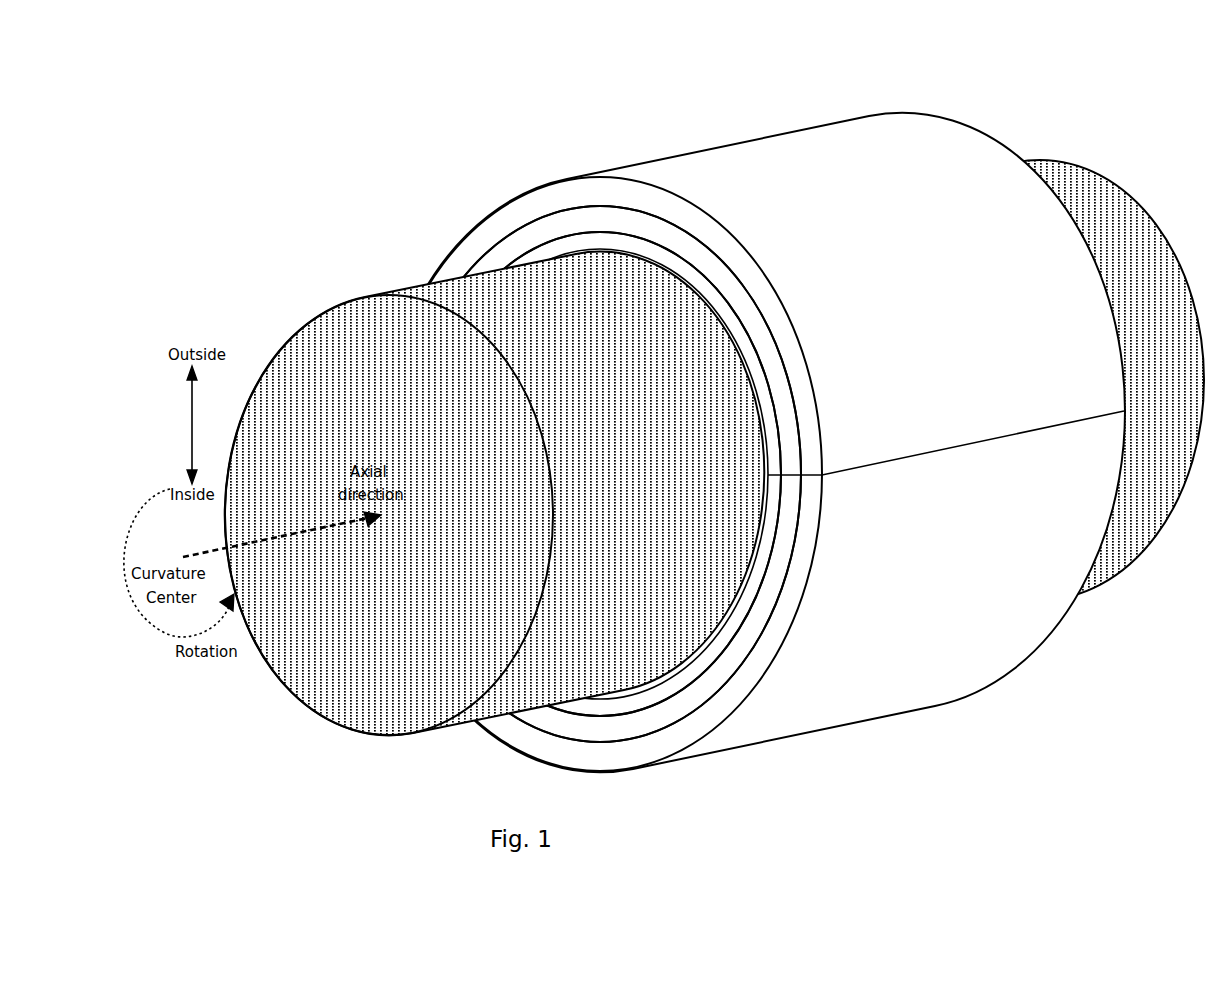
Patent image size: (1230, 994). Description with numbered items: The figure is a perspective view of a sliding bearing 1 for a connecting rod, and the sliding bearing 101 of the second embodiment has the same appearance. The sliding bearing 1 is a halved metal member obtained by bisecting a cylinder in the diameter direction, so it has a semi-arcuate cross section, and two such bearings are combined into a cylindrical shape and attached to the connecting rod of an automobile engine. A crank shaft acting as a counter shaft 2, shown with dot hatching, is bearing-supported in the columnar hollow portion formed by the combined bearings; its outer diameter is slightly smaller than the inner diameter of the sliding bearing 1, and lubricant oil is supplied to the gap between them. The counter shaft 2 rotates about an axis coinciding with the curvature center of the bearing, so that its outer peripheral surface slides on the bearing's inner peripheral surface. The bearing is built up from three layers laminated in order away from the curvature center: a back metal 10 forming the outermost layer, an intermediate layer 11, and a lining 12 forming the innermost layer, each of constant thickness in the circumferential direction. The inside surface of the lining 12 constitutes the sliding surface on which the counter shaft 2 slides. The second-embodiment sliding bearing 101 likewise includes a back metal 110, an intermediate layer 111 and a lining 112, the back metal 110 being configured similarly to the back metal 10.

The counter shaft 2 is at (714, 448).
The sliding bearing 1 is at (751, 445).
The sliding bearing 101 is at (693, 153).
The back metal 10 is at (600, 469).
The back metal 110 is at (596, 188).
The intermediate layer 11 is at (600, 460).
The intermediate layer 111 is at (580, 225).
The lining 12 is at (592, 495).
The lining 112 is at (550, 256).